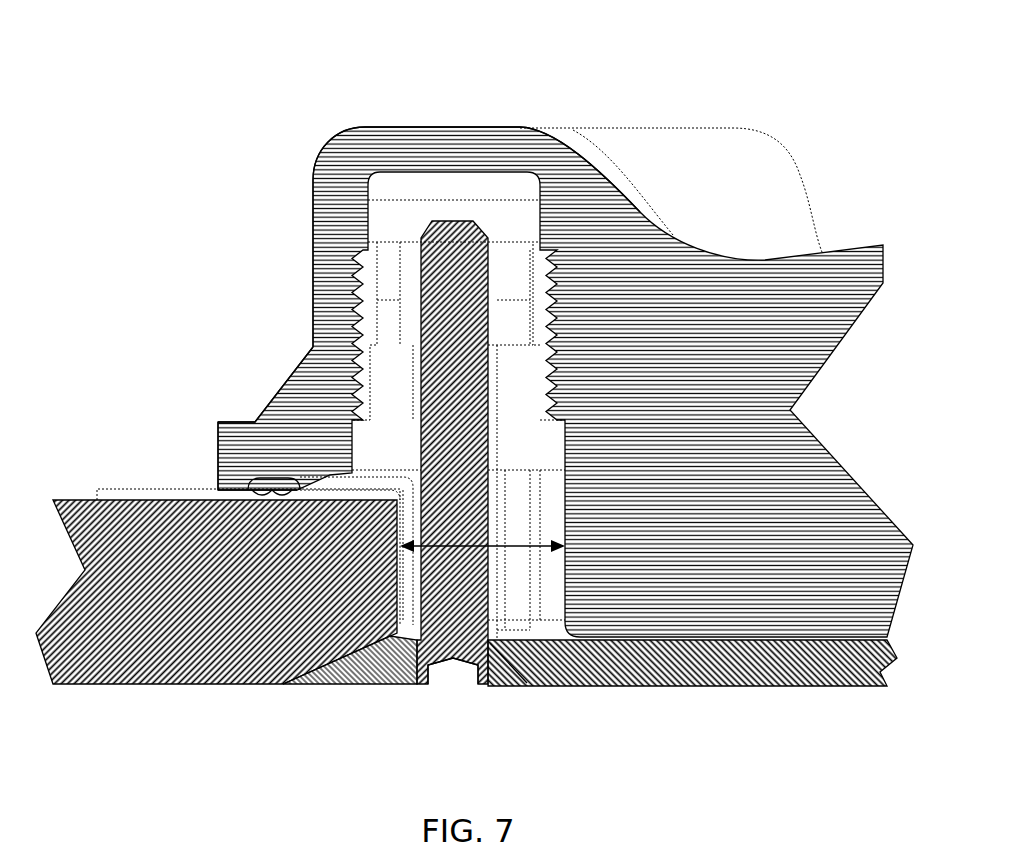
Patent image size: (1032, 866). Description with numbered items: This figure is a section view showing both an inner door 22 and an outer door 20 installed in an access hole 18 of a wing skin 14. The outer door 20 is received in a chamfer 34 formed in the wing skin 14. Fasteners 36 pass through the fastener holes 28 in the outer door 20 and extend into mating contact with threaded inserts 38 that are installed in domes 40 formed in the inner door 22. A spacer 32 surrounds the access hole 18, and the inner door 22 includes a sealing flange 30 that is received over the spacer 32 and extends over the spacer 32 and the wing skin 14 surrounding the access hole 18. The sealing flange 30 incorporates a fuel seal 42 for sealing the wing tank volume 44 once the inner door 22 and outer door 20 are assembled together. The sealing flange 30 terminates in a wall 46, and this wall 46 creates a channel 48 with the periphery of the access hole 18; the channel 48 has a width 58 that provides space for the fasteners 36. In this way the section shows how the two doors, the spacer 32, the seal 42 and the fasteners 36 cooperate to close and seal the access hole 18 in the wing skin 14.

The wing skin 14 is at (158, 645).
The access hole 18 is at (470, 607).
The outer door 20 is at (697, 640).
The inner door 22 is at (667, 540).
The fastener holes 28 is at (398, 660).
The sealing flange 30 is at (283, 422).
The spacer 32 is at (182, 497).
The chamfer 34 is at (358, 678).
The fasteners 36 is at (463, 667).
The threaded inserts 38 is at (517, 265).
The domes 40 is at (378, 132).
The fuel seal 42 is at (272, 487).
The wing tank volume 44 is at (103, 268).
The wall 46 is at (558, 530).
The channel 48 is at (547, 580).
The width 58 is at (505, 550).